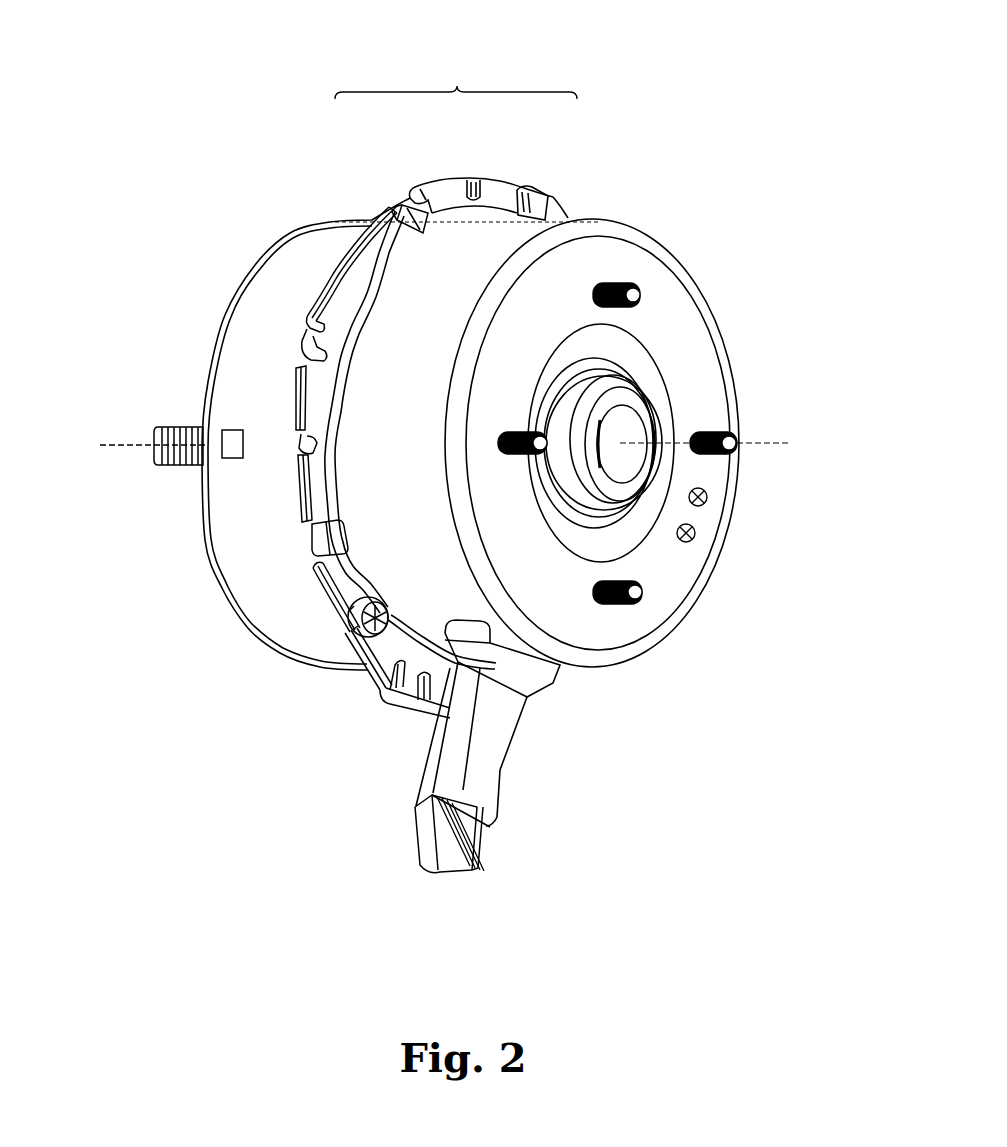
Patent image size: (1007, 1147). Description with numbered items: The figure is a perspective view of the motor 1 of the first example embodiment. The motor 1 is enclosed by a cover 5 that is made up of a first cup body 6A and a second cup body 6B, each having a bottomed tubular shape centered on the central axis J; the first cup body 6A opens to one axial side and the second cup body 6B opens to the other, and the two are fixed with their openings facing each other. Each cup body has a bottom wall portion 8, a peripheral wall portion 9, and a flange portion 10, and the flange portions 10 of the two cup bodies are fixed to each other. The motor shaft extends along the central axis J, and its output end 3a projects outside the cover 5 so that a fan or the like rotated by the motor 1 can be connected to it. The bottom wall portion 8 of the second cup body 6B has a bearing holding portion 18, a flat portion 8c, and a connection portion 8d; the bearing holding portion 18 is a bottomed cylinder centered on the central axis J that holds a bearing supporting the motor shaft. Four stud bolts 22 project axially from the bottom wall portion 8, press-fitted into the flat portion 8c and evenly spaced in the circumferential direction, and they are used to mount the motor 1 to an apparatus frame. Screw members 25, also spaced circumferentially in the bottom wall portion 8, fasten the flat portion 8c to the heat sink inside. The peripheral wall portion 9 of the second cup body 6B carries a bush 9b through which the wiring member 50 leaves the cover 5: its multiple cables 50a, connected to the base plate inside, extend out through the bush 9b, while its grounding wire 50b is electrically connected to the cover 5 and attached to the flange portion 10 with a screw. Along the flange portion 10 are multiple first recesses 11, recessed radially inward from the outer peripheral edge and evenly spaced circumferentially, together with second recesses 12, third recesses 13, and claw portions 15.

The motor 1 is at (713, 103).
The cover 5 is at (456, 81).
The first cup body 6A is at (333, 234).
The second cup body 6B is at (502, 234).
The bottom wall portion 8 is at (673, 312).
The flat portion 8c is at (637, 270).
The connection portion 8d is at (647, 363).
The peripheral wall portion 9 is at (313, 633).
The bush 9b is at (500, 741).
The flange portion 10 is at (333, 275).
The first recess 11 is at (408, 207).
The second recess 12 is at (297, 386).
The third recess 13 is at (300, 437).
The claw portion 15 is at (428, 210).
The bearing holding portion 18 is at (612, 513).
The stud bolt 22 is at (621, 612).
The screw member 25 is at (697, 532).
The output end 3a is at (178, 463).
The wiring member 50 is at (478, 862).
The cable 50a is at (480, 834).
The grounding wire 50b is at (408, 710).
The central axis J is at (118, 443).